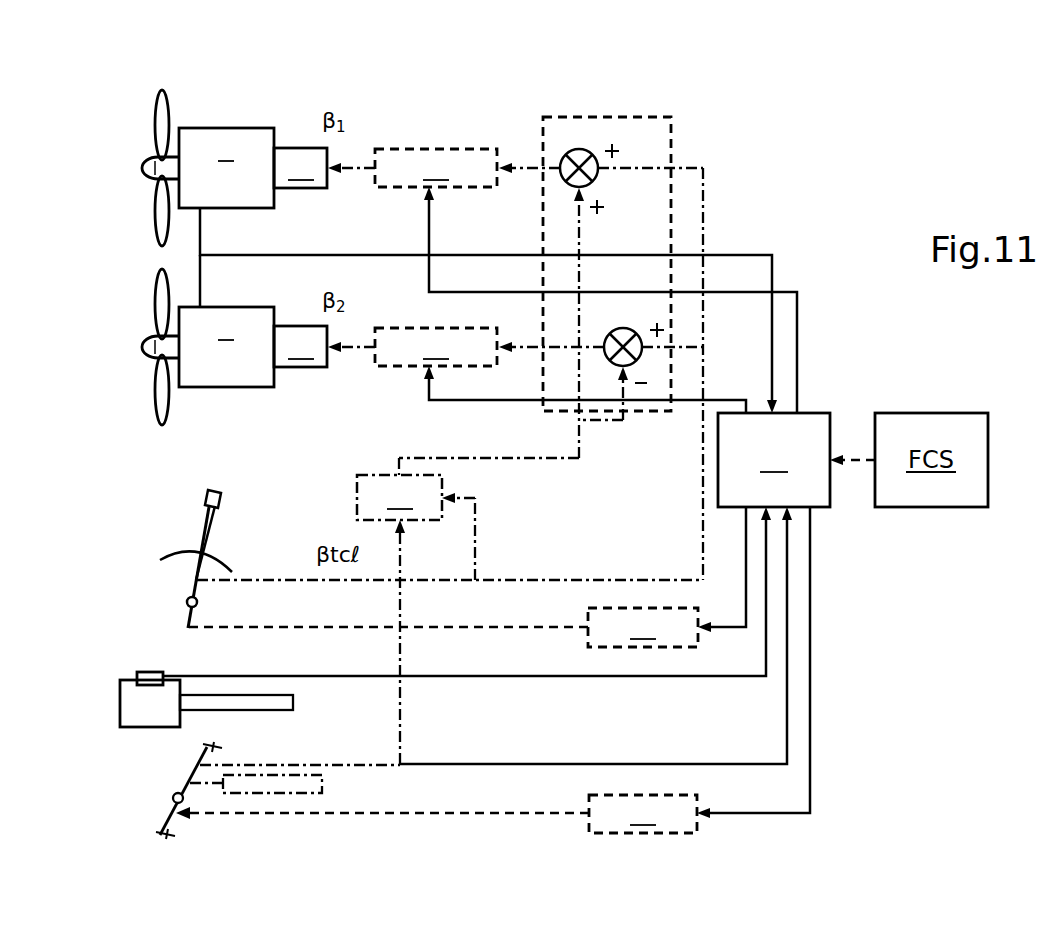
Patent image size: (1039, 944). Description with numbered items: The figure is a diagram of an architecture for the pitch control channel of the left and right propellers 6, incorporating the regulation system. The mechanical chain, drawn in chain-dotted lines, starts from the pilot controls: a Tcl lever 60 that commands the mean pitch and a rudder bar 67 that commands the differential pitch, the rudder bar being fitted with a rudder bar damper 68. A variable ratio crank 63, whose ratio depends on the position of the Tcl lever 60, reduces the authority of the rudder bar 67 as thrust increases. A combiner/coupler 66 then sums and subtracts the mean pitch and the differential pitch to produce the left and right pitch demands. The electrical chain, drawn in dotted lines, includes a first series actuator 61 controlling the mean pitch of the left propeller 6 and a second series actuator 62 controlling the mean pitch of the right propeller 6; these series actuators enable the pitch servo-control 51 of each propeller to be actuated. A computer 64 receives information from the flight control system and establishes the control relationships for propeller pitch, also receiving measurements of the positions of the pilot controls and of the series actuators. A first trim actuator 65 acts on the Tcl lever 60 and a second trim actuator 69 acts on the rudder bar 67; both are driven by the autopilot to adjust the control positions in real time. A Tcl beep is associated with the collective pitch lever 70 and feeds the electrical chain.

The propeller 6 is at (208, 257).
The pitch servo-control 51 is at (300, 257).
The Tcl lever 60 is at (192, 513).
The first series actuator 61 is at (562, 281).
The second series actuator 62 is at (537, 370).
The variable ratio crank 63 is at (399, 497).
The computer 64 is at (496, 615).
The first trim actuator 65 is at (443, 627).
The combiner/coupler 66 is at (427, 112).
The rudder bar 67 is at (160, 805).
The rudder bar damper 68 is at (304, 796).
The second trim actuator 69 is at (436, 814).
The collective pitch lever 70 is at (196, 718).